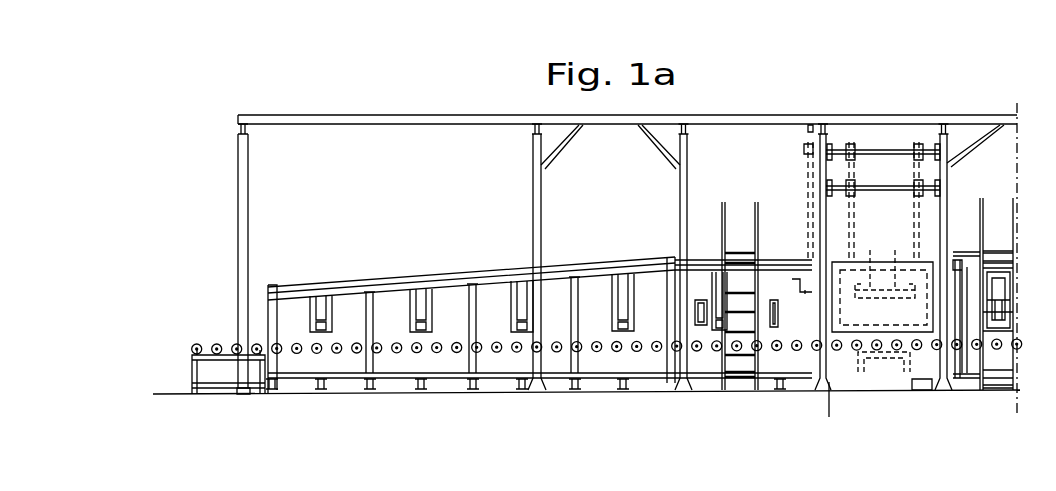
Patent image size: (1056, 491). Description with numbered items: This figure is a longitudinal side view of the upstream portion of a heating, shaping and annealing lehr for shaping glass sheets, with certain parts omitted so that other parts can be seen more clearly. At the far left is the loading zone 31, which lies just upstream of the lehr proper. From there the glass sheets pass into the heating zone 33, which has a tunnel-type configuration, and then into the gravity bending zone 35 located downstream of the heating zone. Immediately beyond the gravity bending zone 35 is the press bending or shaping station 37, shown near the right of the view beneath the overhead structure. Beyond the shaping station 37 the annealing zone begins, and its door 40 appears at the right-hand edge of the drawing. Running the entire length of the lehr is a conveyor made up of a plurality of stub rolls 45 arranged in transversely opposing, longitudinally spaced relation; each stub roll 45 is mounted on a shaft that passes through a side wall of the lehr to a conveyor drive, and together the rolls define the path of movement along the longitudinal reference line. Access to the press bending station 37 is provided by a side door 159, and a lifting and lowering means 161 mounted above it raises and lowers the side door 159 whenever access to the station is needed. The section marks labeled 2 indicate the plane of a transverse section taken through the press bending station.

The infeed roller table 31 is at (193, 336).
The rollers 45 is at (237, 344).
The inclined roller conveyor 33 is at (452, 260).
The ladder 35 is at (707, 240).
The overhead beam 37 is at (884, 108).
The processing station frame 161 is at (803, 180).
The outfeed frame 40 is at (950, 255).
The base support 159 is at (921, 343).
The section line 2- 2 is at (843, 228).